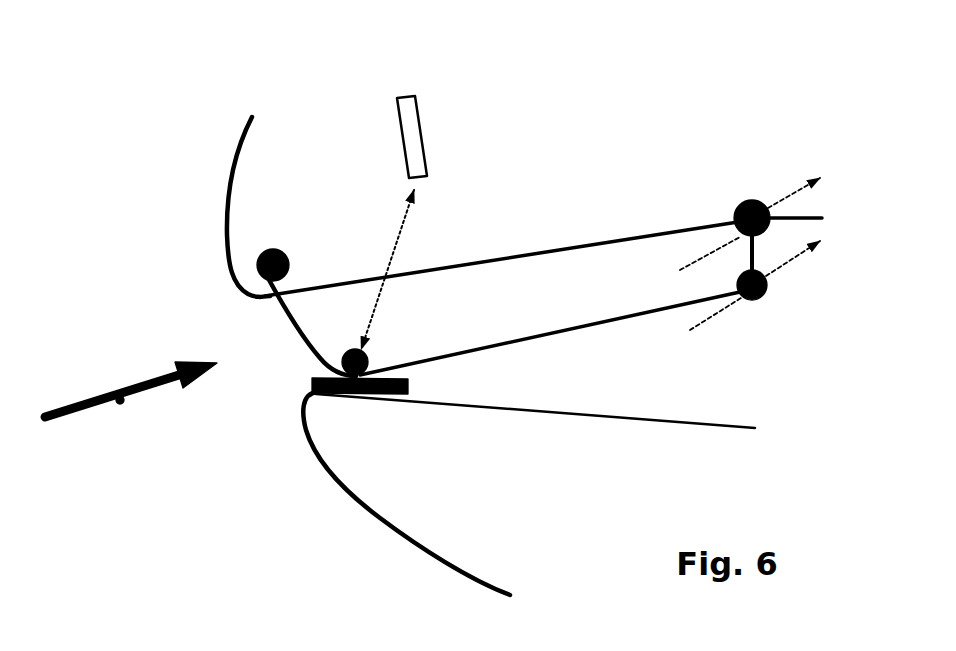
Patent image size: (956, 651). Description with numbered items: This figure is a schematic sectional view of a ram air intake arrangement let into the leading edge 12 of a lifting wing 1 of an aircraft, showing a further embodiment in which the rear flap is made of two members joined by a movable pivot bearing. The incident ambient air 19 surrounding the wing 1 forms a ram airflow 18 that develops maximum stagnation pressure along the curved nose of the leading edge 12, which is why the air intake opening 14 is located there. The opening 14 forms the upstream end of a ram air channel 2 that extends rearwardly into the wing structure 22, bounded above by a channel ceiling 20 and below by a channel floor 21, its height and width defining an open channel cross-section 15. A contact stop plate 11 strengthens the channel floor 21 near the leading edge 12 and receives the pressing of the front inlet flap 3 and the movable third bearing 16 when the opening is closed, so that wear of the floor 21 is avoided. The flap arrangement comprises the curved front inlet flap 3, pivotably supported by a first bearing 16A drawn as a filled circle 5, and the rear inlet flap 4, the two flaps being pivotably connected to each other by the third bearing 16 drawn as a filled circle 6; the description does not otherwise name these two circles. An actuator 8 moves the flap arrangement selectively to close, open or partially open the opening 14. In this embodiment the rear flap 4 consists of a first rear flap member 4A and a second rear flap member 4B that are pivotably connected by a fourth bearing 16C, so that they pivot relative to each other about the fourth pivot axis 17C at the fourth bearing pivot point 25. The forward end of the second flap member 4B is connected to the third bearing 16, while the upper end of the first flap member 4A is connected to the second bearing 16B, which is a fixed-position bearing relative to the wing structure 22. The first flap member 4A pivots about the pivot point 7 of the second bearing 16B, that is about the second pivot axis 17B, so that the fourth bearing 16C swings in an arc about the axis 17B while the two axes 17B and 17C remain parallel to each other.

The lifting wing 1 is at (197, 103).
The ram air channel 2 is at (465, 382).
The front inlet flap 3 is at (297, 338).
The rear inlet flap 4 is at (508, 274).
The first rear flap member 4A is at (750, 250).
The second rear flap member 4B is at (625, 318).
The upper roller 5 is at (288, 258).
The lower roller 6 is at (347, 350).
The pivot point 7 is at (735, 210).
The actuator 8 is at (418, 135).
The contact stop plate 11 is at (317, 383).
The leading edge 12 is at (227, 272).
The air intake opening 14 is at (262, 343).
The open channel cross-section 15 is at (652, 338).
The third bearing 16 is at (382, 333).
The first bearing 16A is at (300, 225).
The second bearing 16B is at (744, 167).
The fourth bearing 16C is at (757, 324).
The second pivot axis 17B is at (787, 197).
The fourth pivot axis 17C is at (787, 262).
The ram airflow 18 is at (120, 403).
The ambient air 19 is at (150, 211).
The channel ceiling 20 is at (475, 257).
The channel floor 21 is at (517, 400).
The wing structure 22 is at (558, 131).
The fourth bearing pivot point 25 is at (763, 297).